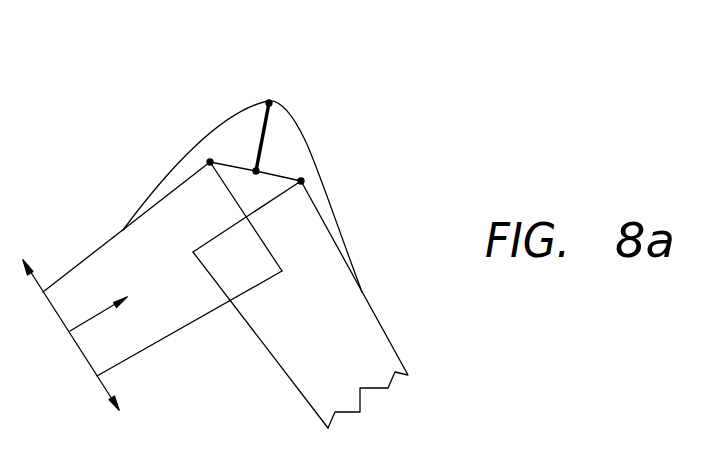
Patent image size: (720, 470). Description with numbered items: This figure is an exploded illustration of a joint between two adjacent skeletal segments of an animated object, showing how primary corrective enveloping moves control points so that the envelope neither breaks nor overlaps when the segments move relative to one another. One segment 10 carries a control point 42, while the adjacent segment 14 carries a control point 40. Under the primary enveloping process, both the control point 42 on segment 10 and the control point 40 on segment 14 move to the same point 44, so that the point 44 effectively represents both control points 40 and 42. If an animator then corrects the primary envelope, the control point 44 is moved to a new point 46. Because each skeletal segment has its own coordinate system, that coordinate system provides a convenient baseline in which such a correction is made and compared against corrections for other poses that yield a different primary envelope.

The segment 10 is at (387, 332).
The segment 14 is at (163, 338).
The control point 40 is at (210, 163).
The control point 42 is at (301, 182).
The point 44 is at (256, 171).
The point 46 is at (269, 104).